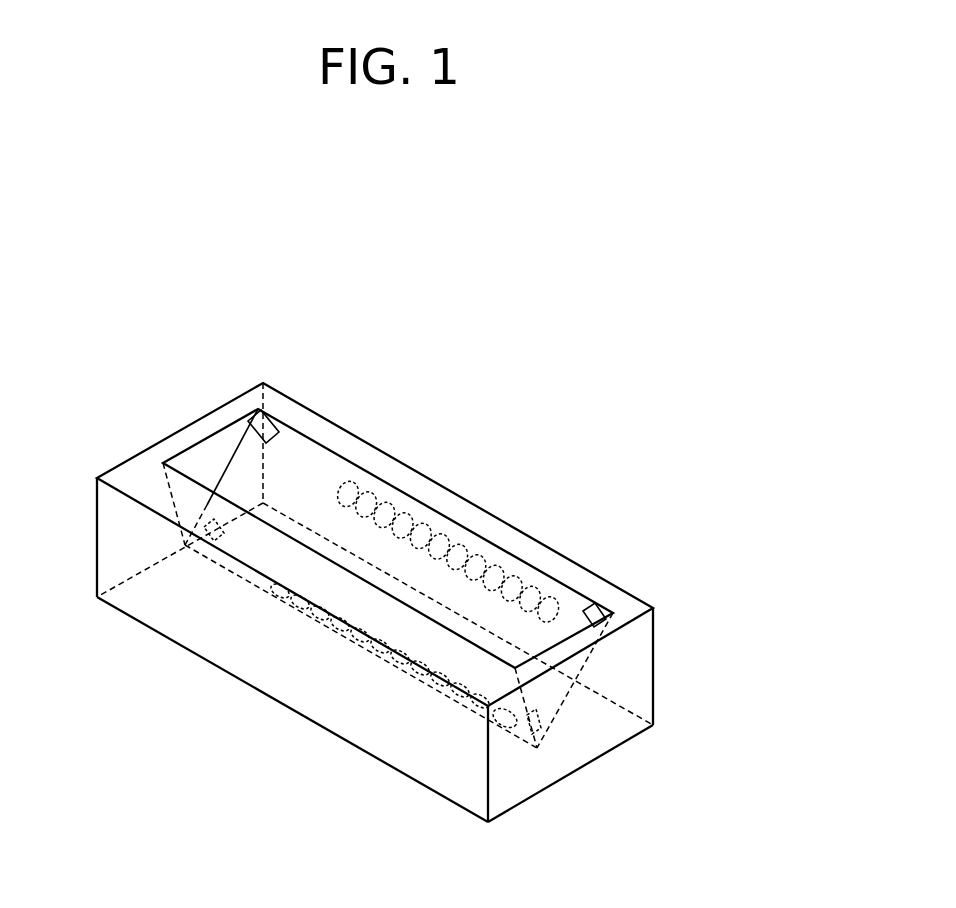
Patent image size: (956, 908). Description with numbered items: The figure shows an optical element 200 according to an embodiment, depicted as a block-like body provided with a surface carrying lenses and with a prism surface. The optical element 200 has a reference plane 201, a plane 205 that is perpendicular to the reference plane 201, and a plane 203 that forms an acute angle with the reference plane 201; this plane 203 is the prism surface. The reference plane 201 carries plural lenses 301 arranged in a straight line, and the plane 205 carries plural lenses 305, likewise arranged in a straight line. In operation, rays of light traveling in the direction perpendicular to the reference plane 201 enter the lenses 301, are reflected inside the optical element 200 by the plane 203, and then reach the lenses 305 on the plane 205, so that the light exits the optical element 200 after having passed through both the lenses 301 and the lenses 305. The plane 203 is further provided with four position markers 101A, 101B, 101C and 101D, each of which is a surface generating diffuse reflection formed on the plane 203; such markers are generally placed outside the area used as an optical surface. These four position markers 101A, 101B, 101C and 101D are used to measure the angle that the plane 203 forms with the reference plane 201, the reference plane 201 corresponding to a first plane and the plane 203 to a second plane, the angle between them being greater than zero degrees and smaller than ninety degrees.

The optical element 200 is at (791, 249).
The reference plane 201 is at (583, 770).
The plane (prism surface) 203 is at (305, 460).
The plane 205 is at (657, 638).
The lenses 301 is at (432, 686).
The lenses 305 is at (530, 592).
The position marker 101A is at (600, 609).
The position marker 101B is at (548, 738).
The position marker 101C is at (197, 522).
The position marker 101D is at (256, 418).